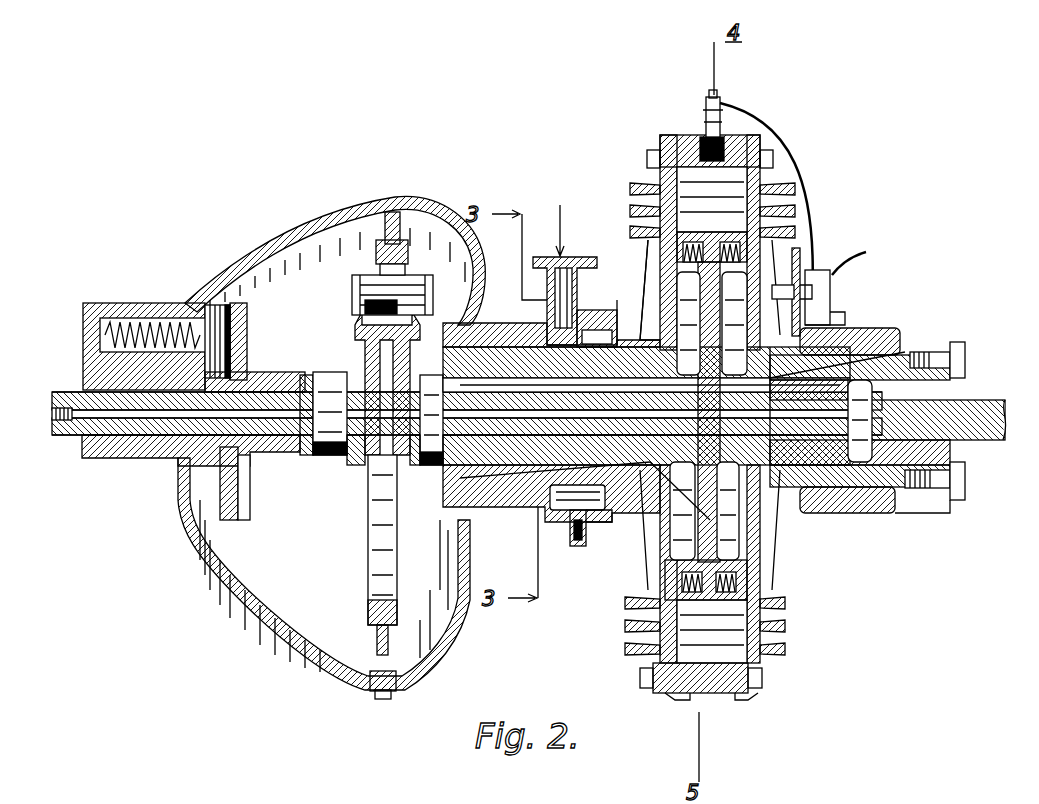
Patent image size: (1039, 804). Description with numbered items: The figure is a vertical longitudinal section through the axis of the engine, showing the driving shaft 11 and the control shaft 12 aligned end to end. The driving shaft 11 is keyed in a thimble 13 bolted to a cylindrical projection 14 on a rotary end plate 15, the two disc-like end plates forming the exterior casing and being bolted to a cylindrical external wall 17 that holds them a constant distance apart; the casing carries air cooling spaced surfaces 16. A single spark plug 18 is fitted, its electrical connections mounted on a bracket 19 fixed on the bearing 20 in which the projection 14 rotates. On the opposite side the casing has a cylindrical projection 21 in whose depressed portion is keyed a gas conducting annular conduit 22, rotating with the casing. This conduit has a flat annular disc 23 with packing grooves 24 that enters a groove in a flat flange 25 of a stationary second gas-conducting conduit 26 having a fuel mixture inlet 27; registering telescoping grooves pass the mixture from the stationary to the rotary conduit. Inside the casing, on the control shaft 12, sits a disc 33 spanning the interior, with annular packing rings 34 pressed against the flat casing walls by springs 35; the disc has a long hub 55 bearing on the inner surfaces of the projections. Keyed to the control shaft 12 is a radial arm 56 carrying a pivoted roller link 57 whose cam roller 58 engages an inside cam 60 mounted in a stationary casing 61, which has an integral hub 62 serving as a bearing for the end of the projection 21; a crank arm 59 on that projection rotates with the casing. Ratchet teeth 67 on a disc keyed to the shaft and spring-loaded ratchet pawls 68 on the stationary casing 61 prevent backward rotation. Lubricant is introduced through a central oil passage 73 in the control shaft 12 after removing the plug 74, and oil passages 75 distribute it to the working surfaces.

The driving shaft 11 is at (985, 436).
The control shaft 12 is at (65, 391).
The thimble 13 is at (940, 500).
The cylindrical projection 14 is at (903, 508).
The rotary end plate 15 is at (755, 575).
The air cooling spaced surfaces 16 is at (790, 642).
The cylindrical external wall 17 is at (712, 688).
The spark plug 18 is at (706, 135).
The bracket 19 is at (822, 300).
The bearing 20 is at (878, 330).
The cylindrical projection 21 is at (626, 338).
The gas conducting annular conduit 22 is at (598, 325).
The flat annular disc 23 is at (586, 528).
The packing grooves 24 is at (570, 522).
The flat flange 25 is at (575, 546).
The second gas-conducting conduit 26 is at (549, 518).
The fuel mixture inlet 27 is at (566, 285).
The disc 33 is at (745, 520).
The annular packing rings 34 is at (688, 604).
The springs 35 is at (695, 246).
The hub 55 is at (778, 400).
The arm 56 is at (327, 456).
The roller link 57 is at (372, 347).
The cam roller 58 is at (390, 306).
The crank arm 59 is at (428, 466).
The inside cam 60 is at (378, 258).
The casing 61 is at (319, 655).
The hub 62 is at (488, 337).
The ratchet teeth 67 is at (243, 497).
The ratchet pawls 68 is at (226, 325).
The central oil passage 73 is at (157, 414).
The plug 74 is at (52, 413).
The oil passages 75 is at (855, 350).